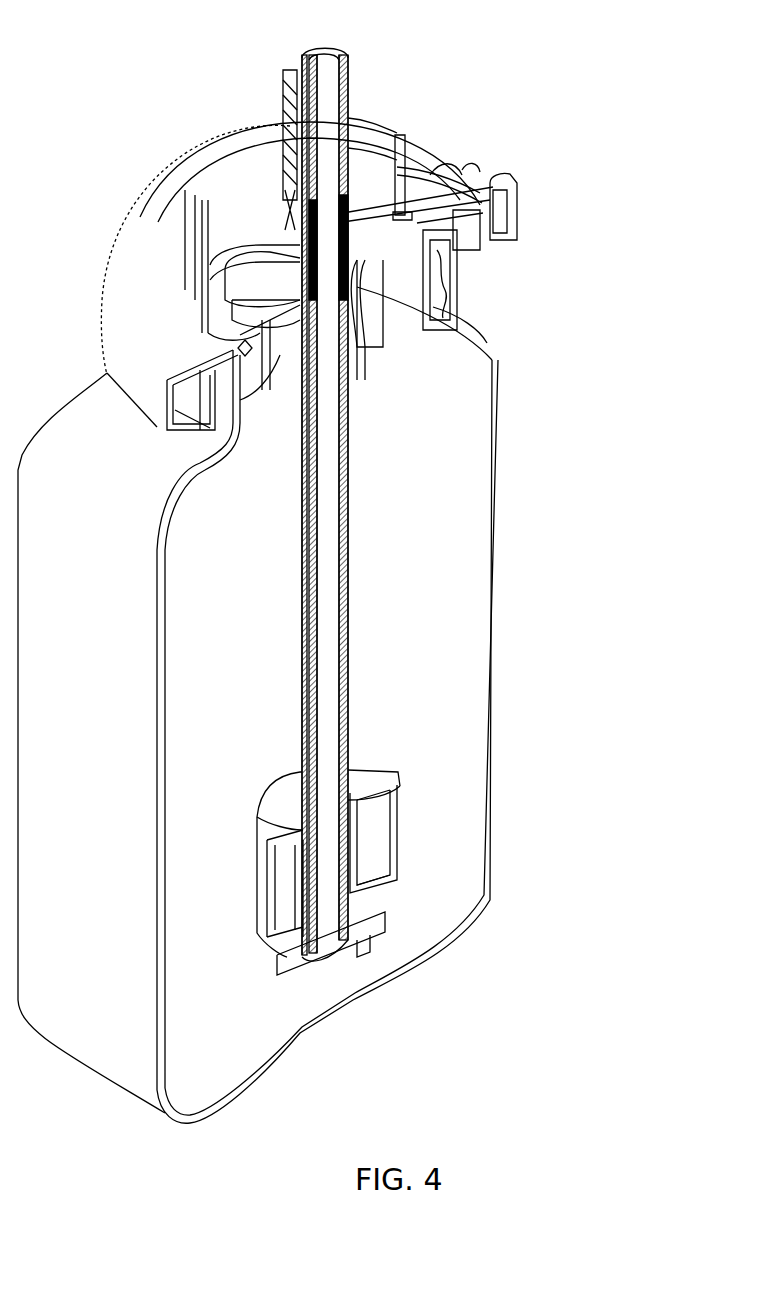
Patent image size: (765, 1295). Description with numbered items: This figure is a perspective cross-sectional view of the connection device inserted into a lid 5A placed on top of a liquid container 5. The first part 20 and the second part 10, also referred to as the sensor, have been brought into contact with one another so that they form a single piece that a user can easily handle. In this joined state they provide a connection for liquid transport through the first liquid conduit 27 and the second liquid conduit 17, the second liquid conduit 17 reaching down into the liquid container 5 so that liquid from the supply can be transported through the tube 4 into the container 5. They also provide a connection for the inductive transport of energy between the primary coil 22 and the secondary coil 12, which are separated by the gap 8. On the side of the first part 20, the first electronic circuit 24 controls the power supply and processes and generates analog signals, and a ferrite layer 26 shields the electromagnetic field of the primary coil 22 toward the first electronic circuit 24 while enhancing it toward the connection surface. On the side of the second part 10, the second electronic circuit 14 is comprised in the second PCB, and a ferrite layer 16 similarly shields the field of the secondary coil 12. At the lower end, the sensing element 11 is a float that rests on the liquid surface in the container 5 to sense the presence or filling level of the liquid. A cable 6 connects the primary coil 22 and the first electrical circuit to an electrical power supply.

The tube 4 is at (326, 50).
The liquid container 5 is at (500, 662).
The lid 5A is at (495, 250).
The cable 6 is at (280, 105).
The gap 8 is at (475, 190).
The second part 10 is at (384, 250).
The sensing element 11 is at (398, 835).
The secondary coil 12 is at (232, 300).
The second electronic circuit 14 is at (276, 345).
The ferrite layer 16 is at (242, 345).
The second liquid conduit 17 is at (346, 628).
The first part 20 is at (400, 135).
The primary coil 22 is at (228, 272).
The first electronic circuit 24 is at (228, 230).
The ferrite layer 26 is at (240, 268).
The first liquid conduit 27 is at (350, 115).